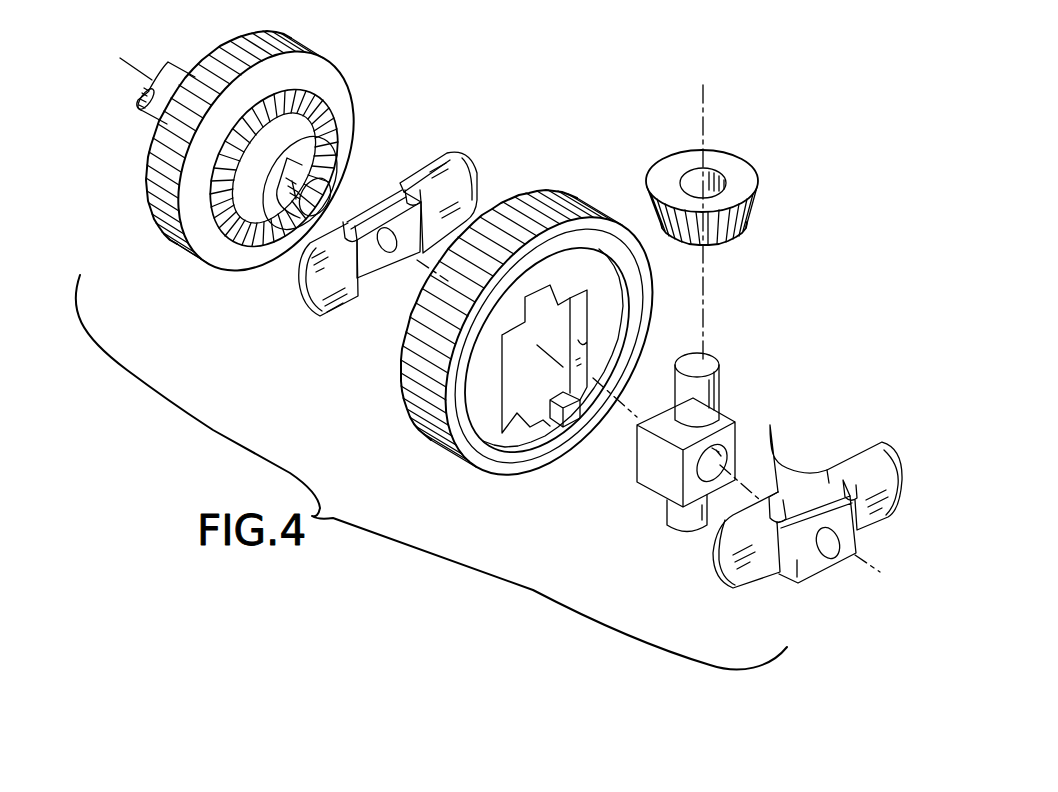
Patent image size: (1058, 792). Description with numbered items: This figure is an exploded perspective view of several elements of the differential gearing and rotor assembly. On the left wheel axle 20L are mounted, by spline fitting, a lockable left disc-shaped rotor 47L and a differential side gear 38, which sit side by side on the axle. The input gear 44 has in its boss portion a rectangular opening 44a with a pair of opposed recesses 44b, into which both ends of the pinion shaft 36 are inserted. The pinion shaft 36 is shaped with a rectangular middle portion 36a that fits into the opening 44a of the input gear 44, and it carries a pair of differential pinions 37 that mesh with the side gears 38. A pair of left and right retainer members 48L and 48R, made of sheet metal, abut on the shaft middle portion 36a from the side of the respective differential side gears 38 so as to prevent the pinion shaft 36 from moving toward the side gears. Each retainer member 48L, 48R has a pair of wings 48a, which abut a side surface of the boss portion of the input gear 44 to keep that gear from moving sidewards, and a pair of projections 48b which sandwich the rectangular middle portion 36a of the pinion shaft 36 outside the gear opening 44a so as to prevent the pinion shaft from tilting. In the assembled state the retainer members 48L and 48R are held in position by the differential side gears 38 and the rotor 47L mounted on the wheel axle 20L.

The left disc-shaped rotor 47L is at (310, 55).
The differential side gear 38 is at (285, 172).
The left wheel axle 20L is at (298, 180).
The left retainer member 48L is at (337, 324).
The right retainer member 48R is at (824, 450).
The wings 48a is at (318, 313).
The projections 48b is at (360, 222).
The input gear 44 is at (553, 222).
The rectangular opening 44a is at (590, 330).
The recesses 44b is at (518, 290).
The differential pinion 37 is at (752, 217).
The pinion shaft 36 is at (724, 386).
The rectangular middle portion 36a is at (658, 452).